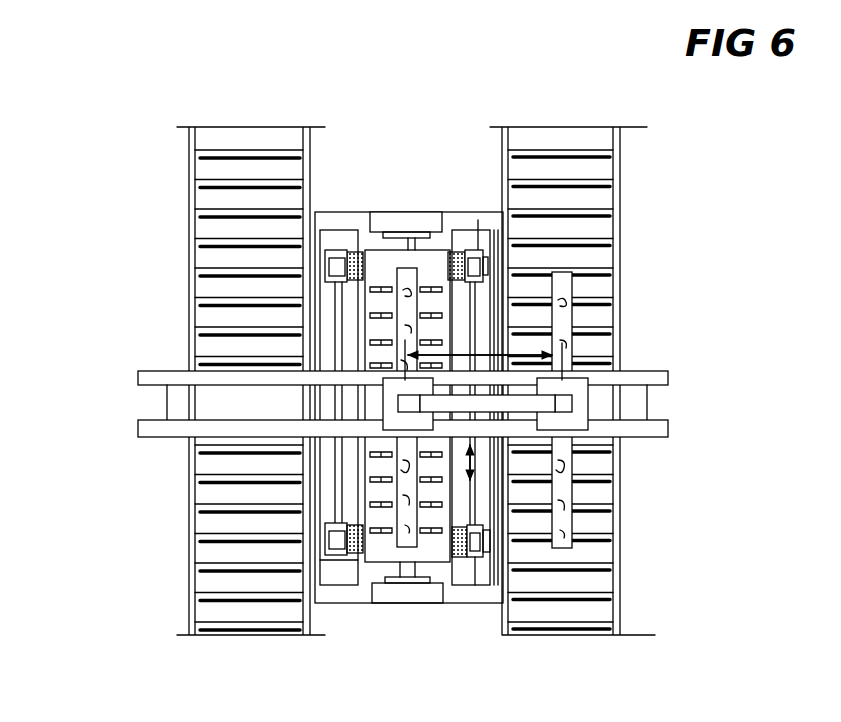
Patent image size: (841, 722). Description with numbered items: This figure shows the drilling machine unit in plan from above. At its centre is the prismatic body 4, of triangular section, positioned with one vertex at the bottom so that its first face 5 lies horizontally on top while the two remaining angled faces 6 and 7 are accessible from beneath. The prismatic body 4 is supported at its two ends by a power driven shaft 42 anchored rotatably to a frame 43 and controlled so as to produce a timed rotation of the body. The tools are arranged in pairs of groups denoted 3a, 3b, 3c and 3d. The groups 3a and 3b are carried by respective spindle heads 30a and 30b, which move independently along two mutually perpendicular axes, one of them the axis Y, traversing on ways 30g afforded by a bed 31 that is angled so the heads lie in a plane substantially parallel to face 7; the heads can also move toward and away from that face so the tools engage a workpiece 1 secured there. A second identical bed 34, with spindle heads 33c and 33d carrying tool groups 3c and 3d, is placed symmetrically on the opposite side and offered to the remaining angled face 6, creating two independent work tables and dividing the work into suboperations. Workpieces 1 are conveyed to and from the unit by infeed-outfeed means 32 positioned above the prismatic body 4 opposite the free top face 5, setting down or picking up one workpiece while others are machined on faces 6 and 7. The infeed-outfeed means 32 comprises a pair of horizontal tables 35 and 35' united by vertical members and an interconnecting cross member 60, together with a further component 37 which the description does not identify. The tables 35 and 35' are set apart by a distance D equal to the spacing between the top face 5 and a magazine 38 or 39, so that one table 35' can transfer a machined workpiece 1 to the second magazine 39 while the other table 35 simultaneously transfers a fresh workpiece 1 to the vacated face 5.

The workpiece 1 is at (558, 283).
The group of tools 3a is at (455, 220).
The group of tools 3b is at (475, 557).
The group of tools 3c is at (345, 220).
The group of tools 3d is at (327, 527).
The prismatic body 4 is at (441, 567).
The first face 5 is at (433, 262).
The angled face 6 is at (357, 467).
The angled face 7 is at (458, 498).
The spindle head 30a is at (492, 285).
The spindle head 30b is at (487, 547).
The ways 30g is at (340, 305).
The bed 31 is at (478, 220).
The infeed-outfeed means 32 is at (600, 409).
The spindle head 33c is at (335, 270).
The spindle head 33d is at (333, 547).
The second bed 34 is at (327, 565).
The horizontal table 35 is at (643, 357).
The horizontal table 35' is at (243, 368).
The lower cross beam 37 is at (655, 432).
The magazine 38 is at (629, 170).
The second magazine 39 is at (170, 225).
The power driven shaft 42 is at (397, 220).
The frame 43 is at (332, 218).
The cross member 60 is at (473, 462).
The distance D is at (483, 353).
The axis Y is at (507, 407).